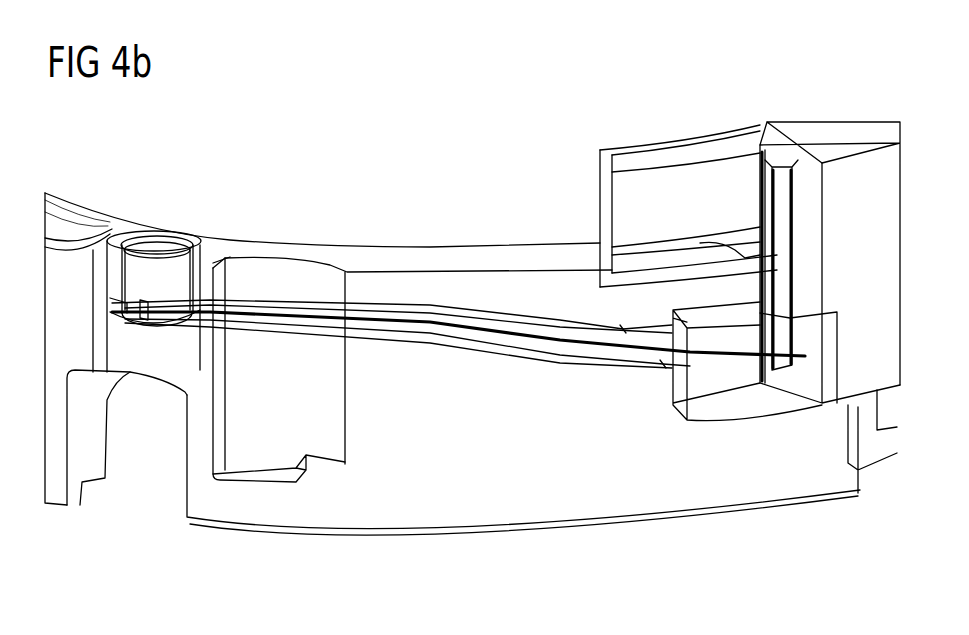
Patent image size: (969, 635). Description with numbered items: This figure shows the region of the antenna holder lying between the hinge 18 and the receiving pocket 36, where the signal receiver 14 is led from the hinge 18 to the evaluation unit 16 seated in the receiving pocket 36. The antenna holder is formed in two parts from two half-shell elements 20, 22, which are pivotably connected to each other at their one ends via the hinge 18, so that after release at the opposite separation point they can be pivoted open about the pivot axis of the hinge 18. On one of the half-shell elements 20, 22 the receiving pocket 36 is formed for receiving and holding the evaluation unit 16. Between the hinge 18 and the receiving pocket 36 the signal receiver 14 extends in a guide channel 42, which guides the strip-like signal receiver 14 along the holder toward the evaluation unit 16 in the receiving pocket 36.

The signal receiver 14 is at (453, 317).
The evaluation unit 16 is at (850, 125).
The hinge 18 is at (150, 360).
The half-shell element 20 is at (55, 495).
The half-shell element 22 is at (490, 512).
The receiving pocket 36 is at (658, 157).
The guide channel 42 is at (517, 317).